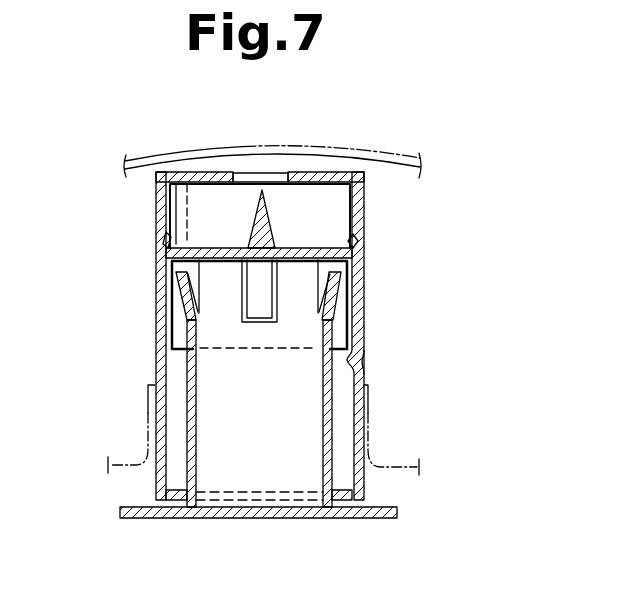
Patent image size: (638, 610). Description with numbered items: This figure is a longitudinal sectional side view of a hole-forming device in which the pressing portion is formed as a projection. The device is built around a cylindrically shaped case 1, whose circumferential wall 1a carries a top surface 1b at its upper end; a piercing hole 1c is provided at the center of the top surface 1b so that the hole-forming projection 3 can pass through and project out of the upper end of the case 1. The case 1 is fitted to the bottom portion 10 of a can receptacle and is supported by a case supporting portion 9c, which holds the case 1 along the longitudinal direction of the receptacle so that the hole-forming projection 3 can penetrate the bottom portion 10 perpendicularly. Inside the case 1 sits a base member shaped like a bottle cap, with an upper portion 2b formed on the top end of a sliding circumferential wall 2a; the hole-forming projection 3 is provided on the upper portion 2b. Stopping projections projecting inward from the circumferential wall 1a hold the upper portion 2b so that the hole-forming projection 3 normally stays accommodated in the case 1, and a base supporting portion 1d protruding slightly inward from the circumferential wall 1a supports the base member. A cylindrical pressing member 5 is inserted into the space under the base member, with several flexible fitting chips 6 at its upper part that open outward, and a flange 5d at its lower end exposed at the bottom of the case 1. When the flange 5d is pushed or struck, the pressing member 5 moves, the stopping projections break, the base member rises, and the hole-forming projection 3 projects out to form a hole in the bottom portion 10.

The case 1 is at (373, 215).
The circumferential wall 1a is at (155, 207).
The top surface 1b is at (207, 171).
The piercing hole 1c is at (284, 172).
The base supporting portion 1d is at (363, 363).
The sliding circumferential wall 2a is at (353, 333).
The upper portion 2b is at (307, 248).
The hole-forming projection 3 is at (248, 227).
The pressing member 5 is at (182, 405).
The flange 5d is at (397, 518).
The fitting chips 6 is at (199, 296).
The case supporting portion 9c is at (380, 441).
The bottom portion 10 is at (378, 160).